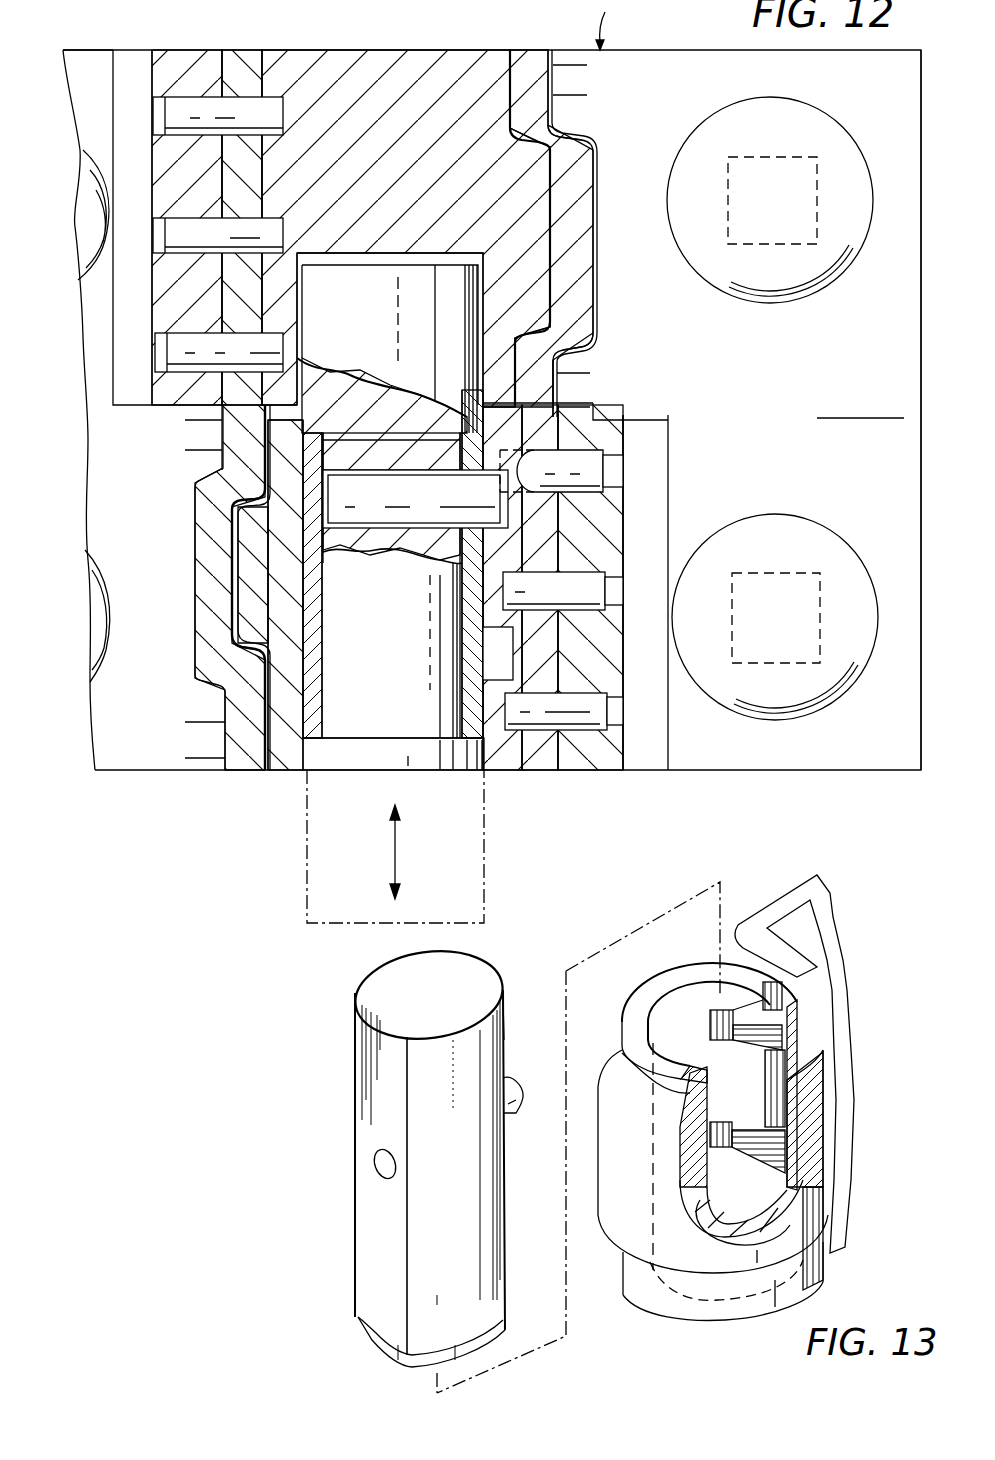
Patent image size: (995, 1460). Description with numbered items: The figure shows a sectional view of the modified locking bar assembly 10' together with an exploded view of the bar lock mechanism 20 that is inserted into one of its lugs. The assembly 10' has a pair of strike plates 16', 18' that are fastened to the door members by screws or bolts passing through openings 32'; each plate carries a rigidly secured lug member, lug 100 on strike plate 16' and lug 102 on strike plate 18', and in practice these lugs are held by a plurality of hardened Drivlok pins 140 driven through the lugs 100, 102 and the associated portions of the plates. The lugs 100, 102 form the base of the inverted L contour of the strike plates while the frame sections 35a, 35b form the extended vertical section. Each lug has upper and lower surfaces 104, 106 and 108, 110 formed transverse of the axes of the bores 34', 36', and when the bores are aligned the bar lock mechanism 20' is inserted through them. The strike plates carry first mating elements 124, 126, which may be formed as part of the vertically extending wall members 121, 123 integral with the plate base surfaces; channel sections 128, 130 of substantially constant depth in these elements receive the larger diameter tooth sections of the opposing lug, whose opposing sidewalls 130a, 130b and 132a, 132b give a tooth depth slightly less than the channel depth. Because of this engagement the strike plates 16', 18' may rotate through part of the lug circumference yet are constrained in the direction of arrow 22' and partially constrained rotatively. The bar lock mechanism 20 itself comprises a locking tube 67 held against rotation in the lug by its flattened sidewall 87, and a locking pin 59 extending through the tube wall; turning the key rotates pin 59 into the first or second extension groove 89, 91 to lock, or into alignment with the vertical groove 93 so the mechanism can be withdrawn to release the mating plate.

In FIG. 12, the locking bar assembly 10' is at (631, 25).
In FIG. 12, the strike plate 16' is at (908, 428).
In FIG. 13, the strike plate 16' is at (794, 1043).
In FIG. 12, the strike plate 18' is at (100, 436).
In FIG. 13, the bar lock mechanism 20 is at (356, 1154).
In FIG. 12, the bar lock mechanism 20' is at (417, 556).
In FIG. 12, the directional arrow 22' is at (395, 846).
In FIG. 12, the openings 32' is at (778, 408).
In FIG. 12, the bore opening 34' is at (390, 303).
In FIG. 12, the frame section 35a is at (860, 406).
In FIG. 12, the frame section 35b is at (97, 60).
In FIG. 13, the bore opening 36' is at (809, 1195).
In FIG. 13, the locking pin 59 is at (509, 1092).
In FIG. 13, the locking tube 67 is at (504, 1020).
In FIG. 13, the flattened sidewall 87 is at (373, 1058).
In FIG. 13, the first extension groove 89 is at (780, 1140).
In FIG. 13, the second extension groove 91 is at (770, 1030).
In FIG. 13, the vertical groove 93 is at (775, 1082).
In FIG. 12, the lug member 100 is at (565, 762).
In FIG. 13, the lug member 100 is at (850, 1040).
In FIG. 12, the lug member 102 is at (478, 50).
In FIG. 12, the upper surface 104 is at (645, 412).
In FIG. 12, the lower surface 106 is at (620, 773).
In FIG. 12, the upper surface 108 is at (203, 51).
In FIG. 12, the lower surface 110 is at (147, 408).
In FIG. 12, the strike plate wall member 121 is at (540, 368).
In FIG. 12, the strike plate wall member 123 is at (222, 432).
In FIG. 12, the first mating element 124 is at (196, 608).
In FIG. 12, the first mating element 126 is at (595, 257).
In FIG. 12, the channel section 128 is at (232, 545).
In FIG. 12, the channel section 130 is at (553, 210).
In FIG. 12, the sidewall 130a is at (232, 655).
In FIG. 12, the sidewall 130b is at (228, 494).
In FIG. 12, the sidewall 132a is at (553, 330).
In FIG. 12, the sidewall 132b is at (560, 120).
In FIG. 12, the Drivlok pins 140 is at (273, 118).